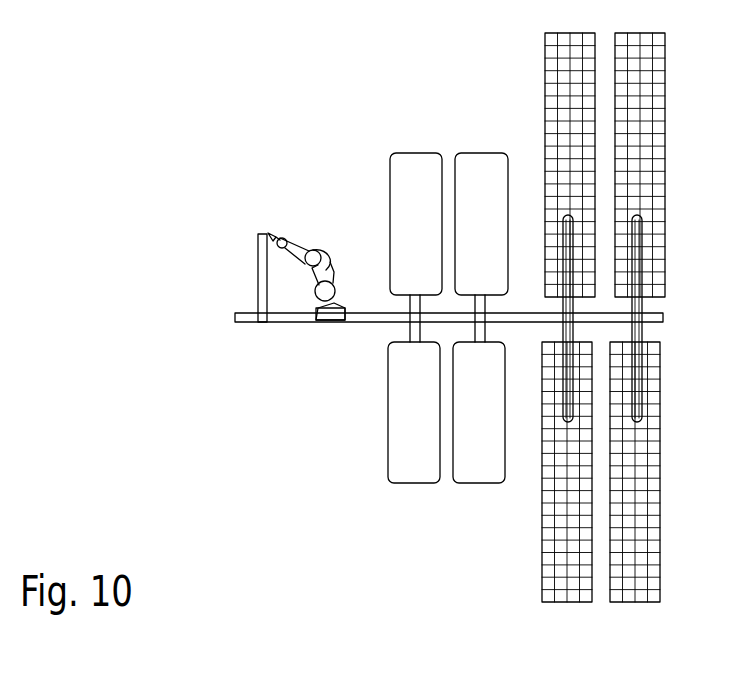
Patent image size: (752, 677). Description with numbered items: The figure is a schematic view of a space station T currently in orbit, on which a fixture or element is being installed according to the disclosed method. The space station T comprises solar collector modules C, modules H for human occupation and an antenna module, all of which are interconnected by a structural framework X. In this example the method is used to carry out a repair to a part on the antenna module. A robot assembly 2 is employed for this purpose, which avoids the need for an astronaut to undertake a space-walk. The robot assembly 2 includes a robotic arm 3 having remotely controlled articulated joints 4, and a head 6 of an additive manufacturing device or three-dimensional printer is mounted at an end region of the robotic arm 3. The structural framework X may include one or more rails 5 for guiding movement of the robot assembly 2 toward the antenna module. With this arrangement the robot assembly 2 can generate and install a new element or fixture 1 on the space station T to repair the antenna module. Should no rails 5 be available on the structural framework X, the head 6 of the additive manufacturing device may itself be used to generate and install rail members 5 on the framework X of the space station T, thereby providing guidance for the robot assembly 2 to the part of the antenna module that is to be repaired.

The element or fixture 1 is at (258, 268).
The robot assembly 2 is at (309, 268).
The robotic arm 3 is at (301, 248).
The articulated joints 4 is at (327, 288).
The rails 5 is at (342, 322).
The head 6 is at (298, 232).
The modules for human occupation H is at (464, 152).
The solar collector modules C is at (648, 558).
The structural framework X is at (655, 322).
The space station T is at (200, 475).